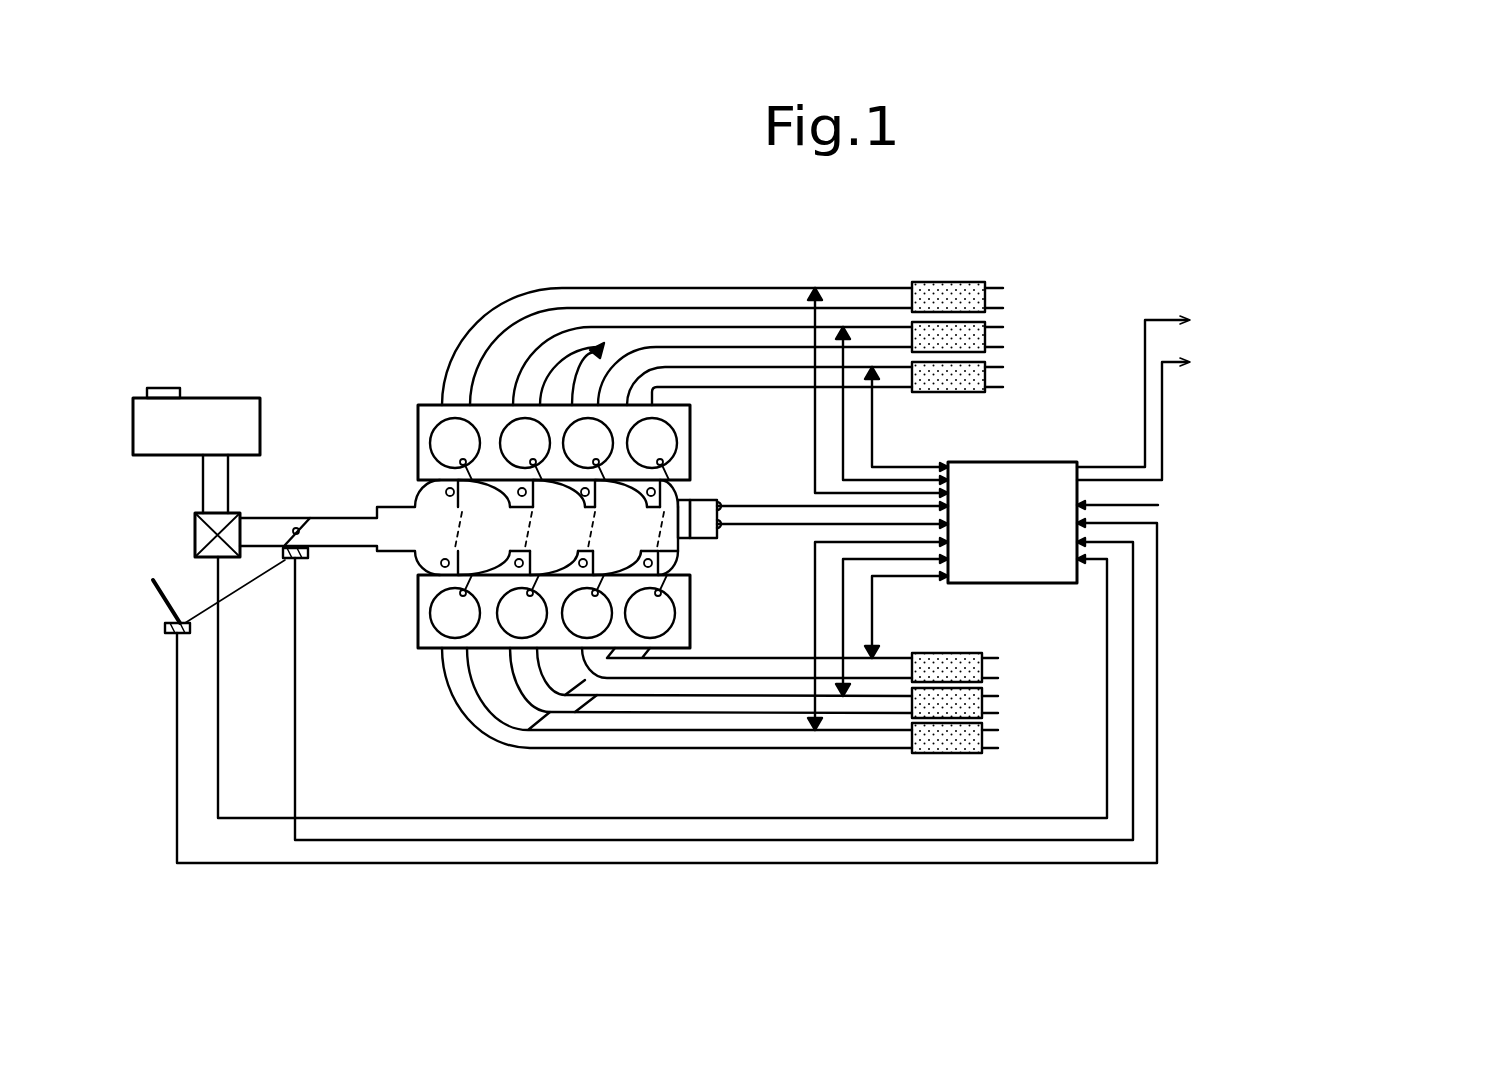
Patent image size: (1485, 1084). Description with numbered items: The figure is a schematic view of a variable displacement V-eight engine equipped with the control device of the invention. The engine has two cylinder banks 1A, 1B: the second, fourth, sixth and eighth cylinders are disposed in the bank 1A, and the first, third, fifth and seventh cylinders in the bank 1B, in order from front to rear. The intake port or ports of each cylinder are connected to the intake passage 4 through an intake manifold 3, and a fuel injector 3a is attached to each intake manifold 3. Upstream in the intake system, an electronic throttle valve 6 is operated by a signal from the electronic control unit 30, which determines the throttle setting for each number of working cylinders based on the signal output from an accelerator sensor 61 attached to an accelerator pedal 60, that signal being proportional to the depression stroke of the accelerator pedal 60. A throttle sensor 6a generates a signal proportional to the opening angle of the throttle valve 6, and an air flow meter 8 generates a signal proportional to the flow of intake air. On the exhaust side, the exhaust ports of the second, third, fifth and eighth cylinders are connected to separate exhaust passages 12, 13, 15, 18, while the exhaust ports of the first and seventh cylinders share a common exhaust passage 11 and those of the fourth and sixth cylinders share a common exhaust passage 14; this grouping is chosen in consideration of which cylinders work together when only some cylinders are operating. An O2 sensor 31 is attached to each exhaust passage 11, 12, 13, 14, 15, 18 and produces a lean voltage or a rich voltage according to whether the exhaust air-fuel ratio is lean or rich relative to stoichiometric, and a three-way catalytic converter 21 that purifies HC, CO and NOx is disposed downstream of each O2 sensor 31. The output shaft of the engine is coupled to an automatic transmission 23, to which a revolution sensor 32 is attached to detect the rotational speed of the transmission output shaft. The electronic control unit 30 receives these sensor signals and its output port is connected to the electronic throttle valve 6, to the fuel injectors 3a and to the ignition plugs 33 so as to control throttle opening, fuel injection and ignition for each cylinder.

The cylinder bank 1A is at (430, 403).
The cylinder bank 1B is at (425, 650).
The intake manifold 3 is at (418, 556).
The fuel injector 3a is at (432, 500).
The ignition plug 33 is at (418, 460).
The intake passage 4 is at (690, 538).
The automatic transmission 23 is at (700, 500).
The revolution sensor 32 is at (720, 506).
The electronic throttle valve 6 is at (285, 537).
The throttle sensor 6a is at (318, 553).
The air flow meter 8 is at (195, 540).
The accelerator pedal 60 is at (185, 597).
The accelerator sensor 61 is at (168, 634).
The common exhaust passage 11 is at (725, 750).
The exhaust passage 12 is at (604, 288).
The exhaust passage 13 is at (670, 714).
The common exhaust passage 14 is at (673, 330).
The exhaust passage 15 is at (716, 656).
The exhaust passage 18 is at (730, 372).
The three-way catalytic converter 21 is at (912, 338).
The O2 sensor 31 is at (855, 330).
The electronic control unit 30 is at (1046, 462).